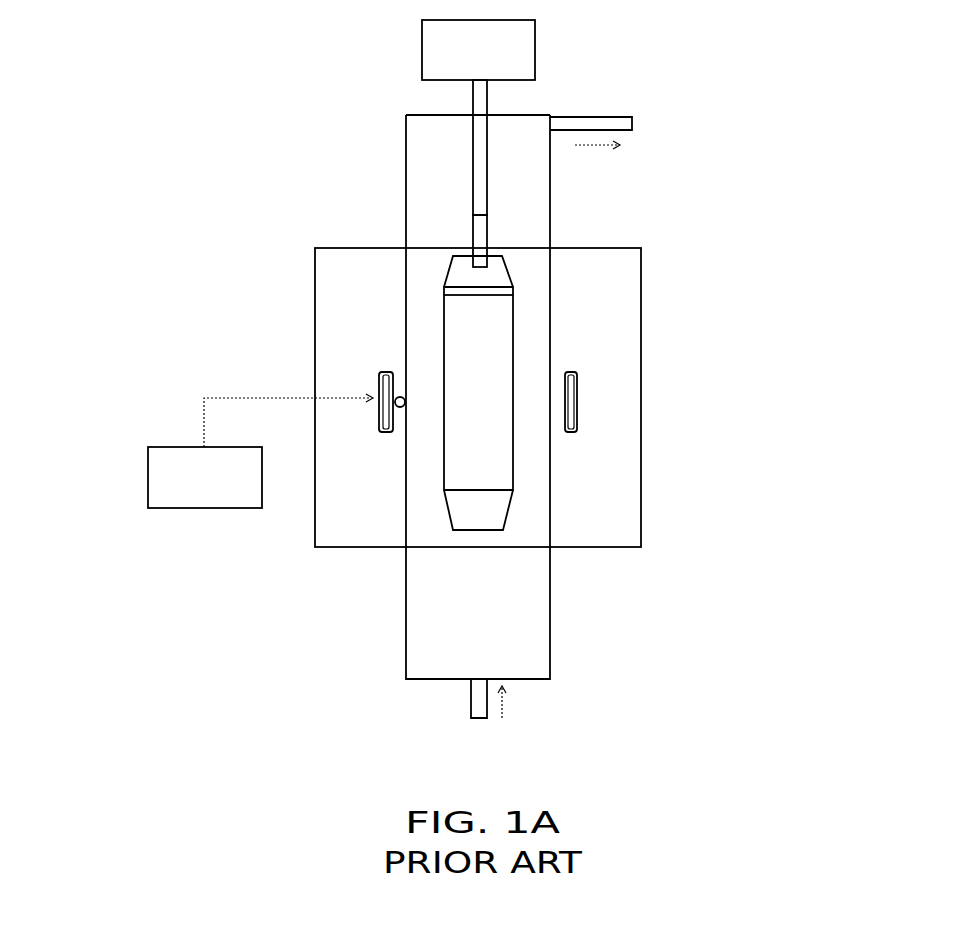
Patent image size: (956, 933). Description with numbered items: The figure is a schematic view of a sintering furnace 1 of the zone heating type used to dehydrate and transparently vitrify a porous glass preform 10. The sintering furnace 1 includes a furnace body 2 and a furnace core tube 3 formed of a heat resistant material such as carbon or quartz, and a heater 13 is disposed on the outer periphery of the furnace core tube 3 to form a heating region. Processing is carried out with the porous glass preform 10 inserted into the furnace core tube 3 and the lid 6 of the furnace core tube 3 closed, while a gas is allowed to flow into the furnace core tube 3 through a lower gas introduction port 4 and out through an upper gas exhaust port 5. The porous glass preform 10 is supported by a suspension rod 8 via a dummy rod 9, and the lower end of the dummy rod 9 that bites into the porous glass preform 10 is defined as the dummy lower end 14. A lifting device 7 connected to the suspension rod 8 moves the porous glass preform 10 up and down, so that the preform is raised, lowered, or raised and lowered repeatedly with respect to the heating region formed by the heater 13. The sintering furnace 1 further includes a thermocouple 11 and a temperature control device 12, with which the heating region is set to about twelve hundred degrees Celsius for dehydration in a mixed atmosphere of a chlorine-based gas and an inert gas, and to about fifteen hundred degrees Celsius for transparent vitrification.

The sintering furnace 1 is at (301, 183).
The furnace body 2 is at (641, 300).
The furnace core tube 3 is at (551, 205).
The lower gas introduction port 4 is at (471, 696).
The upper gas exhaust port 5 is at (632, 117).
The lid 6 is at (412, 115).
The lifting device 7 is at (422, 60).
The suspension rod 8 is at (473, 188).
The dummy rod 9 is at (473, 230).
The porous glass preform 10 is at (444, 328).
The thermocouple 11 is at (403, 407).
The temperature control device 12 is at (148, 503).
The heater 13 is at (379, 375).
The dummy lower end 14 is at (453, 262).